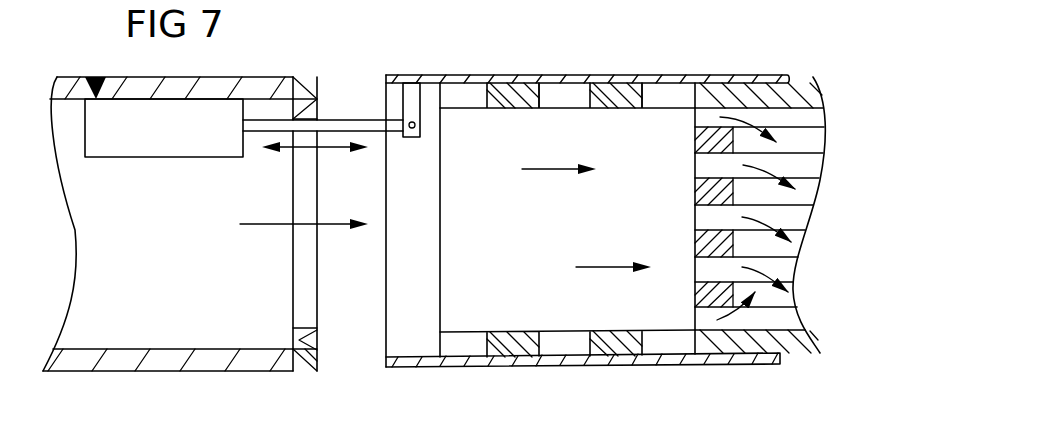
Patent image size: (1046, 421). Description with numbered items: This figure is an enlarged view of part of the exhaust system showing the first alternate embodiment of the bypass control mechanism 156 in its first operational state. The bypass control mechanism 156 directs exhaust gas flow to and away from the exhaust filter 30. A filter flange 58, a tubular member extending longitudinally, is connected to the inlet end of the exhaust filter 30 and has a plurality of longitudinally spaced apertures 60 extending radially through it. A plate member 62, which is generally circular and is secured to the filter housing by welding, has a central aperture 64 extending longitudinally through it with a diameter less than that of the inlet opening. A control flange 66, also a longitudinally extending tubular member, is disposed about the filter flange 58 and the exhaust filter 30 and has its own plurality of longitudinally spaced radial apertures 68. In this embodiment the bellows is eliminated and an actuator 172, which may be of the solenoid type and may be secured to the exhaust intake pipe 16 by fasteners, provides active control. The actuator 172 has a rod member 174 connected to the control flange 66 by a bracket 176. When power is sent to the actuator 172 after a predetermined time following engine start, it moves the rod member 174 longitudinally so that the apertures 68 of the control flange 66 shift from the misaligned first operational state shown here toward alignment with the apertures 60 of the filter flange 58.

The exhaust intake pipe 16 is at (118, 363).
The exhaust filter 30 is at (813, 76).
The filter flange 58 is at (513, 92).
The apertures 60 is at (542, 97).
The plate member 62 is at (300, 368).
The central aperture 64 is at (304, 328).
The control flange 66 is at (462, 362).
The apertures 68 is at (598, 362).
The bypass control mechanism 156 is at (96, 77).
The actuator 172 is at (206, 118).
The rod member 174 is at (333, 122).
The bracket 176 is at (413, 100).